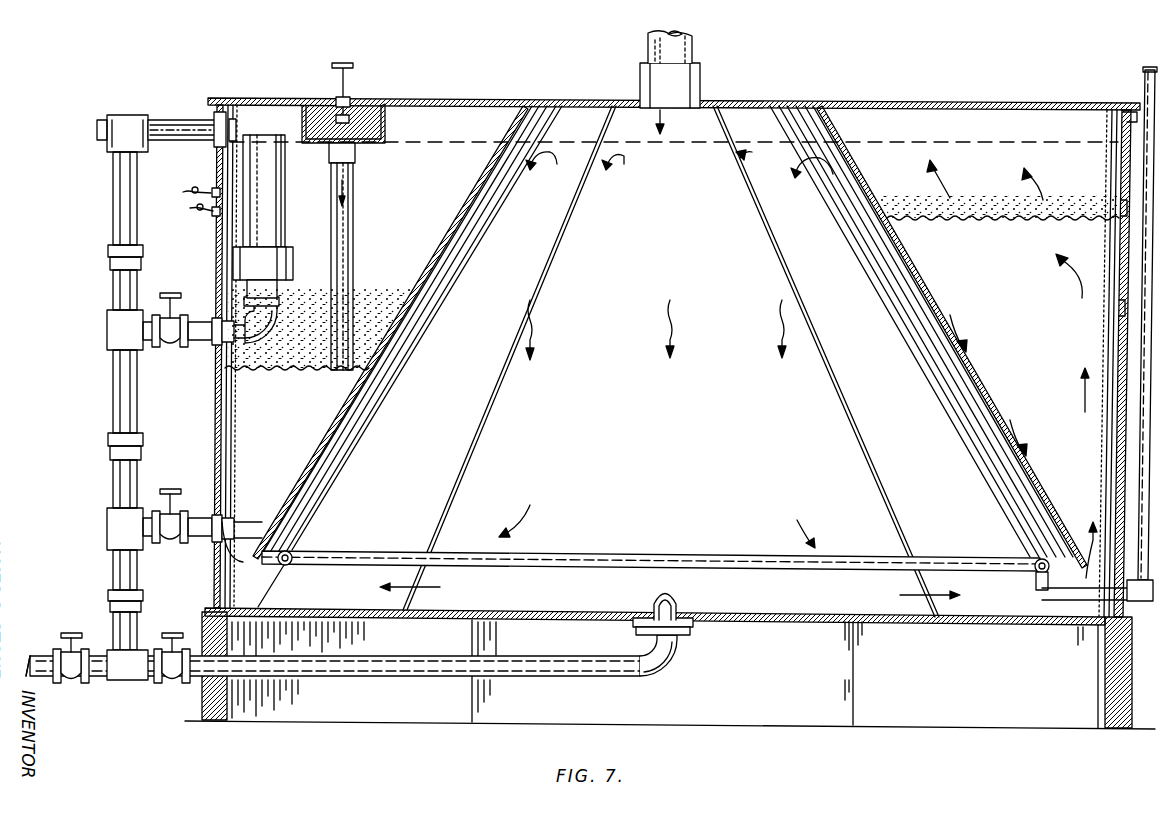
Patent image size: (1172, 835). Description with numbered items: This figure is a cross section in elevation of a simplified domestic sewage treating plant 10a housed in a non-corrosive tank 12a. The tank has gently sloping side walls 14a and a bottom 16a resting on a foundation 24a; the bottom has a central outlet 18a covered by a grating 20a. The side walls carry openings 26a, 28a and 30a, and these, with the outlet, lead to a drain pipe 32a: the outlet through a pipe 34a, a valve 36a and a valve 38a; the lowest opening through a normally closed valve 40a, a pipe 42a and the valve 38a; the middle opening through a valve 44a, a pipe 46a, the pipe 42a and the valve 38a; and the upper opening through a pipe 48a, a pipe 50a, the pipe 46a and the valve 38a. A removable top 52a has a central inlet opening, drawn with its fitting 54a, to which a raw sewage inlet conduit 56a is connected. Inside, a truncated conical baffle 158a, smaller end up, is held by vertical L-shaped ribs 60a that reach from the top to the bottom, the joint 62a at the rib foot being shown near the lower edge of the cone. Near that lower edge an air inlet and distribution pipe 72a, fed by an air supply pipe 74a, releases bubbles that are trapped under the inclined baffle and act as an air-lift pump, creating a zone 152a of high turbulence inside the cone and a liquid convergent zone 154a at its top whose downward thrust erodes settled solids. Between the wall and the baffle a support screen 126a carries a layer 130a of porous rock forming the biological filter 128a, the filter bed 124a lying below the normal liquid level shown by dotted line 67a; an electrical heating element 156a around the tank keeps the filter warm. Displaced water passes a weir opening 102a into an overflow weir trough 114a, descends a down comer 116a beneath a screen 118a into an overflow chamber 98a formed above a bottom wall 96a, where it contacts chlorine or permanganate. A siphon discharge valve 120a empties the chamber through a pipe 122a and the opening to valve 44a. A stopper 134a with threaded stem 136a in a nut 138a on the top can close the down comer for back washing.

The treating plant 10a is at (1008, 184).
The tank 12a is at (208, 456).
The side walls 14a is at (214, 413).
The bottom 16a is at (897, 627).
The outlet 18a is at (692, 624).
The grating 20a is at (674, 600).
The foundation 24a is at (1126, 728).
The opening 26a is at (214, 146).
The opening 28a is at (248, 340).
The opening 30a is at (223, 548).
The drain pipe 32a is at (28, 660).
The pipe 34a is at (394, 668).
The valve 36a is at (172, 682).
The valve 38a is at (72, 682).
The valve 40a is at (166, 524).
The pipe 42a is at (119, 571).
The valve 44a is at (168, 320).
The pipe 46a is at (116, 402).
The pipe 48a is at (176, 122).
The pipe 50a is at (117, 191).
The top 52a is at (903, 103).
The inlet fitting 54a is at (700, 100).
The raw sewage inlet conduit 56a is at (700, 76).
The L-shaped ribs 60a is at (277, 587).
The pipe joint 62a is at (261, 570).
The normal liquid level 67a is at (876, 142).
The air inlet and distribution pipe 72a is at (1040, 573).
The air supply pipe 74a is at (1143, 88).
The bottom wall 96a is at (243, 548).
The overflow chamber 98a is at (412, 330).
The weir opening 102a is at (385, 104).
The overflow weir trough 114a is at (386, 128).
The down comer 116a is at (354, 220).
The screen 118a is at (331, 372).
The discharge valve 120a is at (267, 220).
The pipe 122a is at (222, 346).
The filter bed 124a is at (368, 298).
The support screen 126a is at (1035, 223).
The biological filter 128a is at (963, 213).
The layer of porous rock particles 130a is at (1038, 204).
The stopper 134a is at (336, 118).
The threaded stem 136a is at (332, 72).
The nut 138a is at (348, 100).
The zone of high hydraulic turbulence 152a is at (670, 449).
The liquid convergent zone 154a is at (671, 361).
The electrical heating element 156a is at (215, 215).
The truncated conical baffle 158a is at (930, 248).